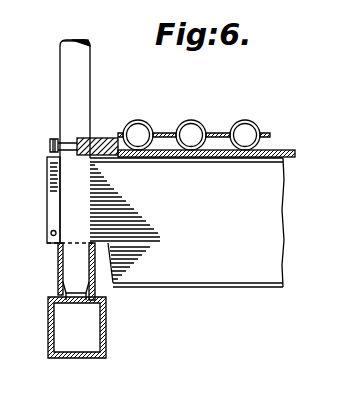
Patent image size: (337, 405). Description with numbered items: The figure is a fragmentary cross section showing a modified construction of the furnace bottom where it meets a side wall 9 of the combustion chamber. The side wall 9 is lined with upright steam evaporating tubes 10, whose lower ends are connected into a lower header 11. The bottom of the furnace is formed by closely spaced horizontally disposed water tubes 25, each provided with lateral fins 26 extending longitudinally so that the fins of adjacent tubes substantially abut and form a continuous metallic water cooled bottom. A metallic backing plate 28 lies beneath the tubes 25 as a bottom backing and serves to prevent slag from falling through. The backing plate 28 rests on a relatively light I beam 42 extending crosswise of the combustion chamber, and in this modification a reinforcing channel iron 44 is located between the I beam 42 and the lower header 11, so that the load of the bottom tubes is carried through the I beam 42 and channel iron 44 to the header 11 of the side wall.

The side wall 9 is at (65, 141).
The steam evaporating tube 10 is at (62, 60).
The lower header 11 is at (80, 358).
The water tube 25 is at (143, 121).
The fin 26 is at (185, 124).
The backing plate 28 is at (272, 143).
The I beam 42 is at (187, 222).
The channel iron 44 is at (58, 275).